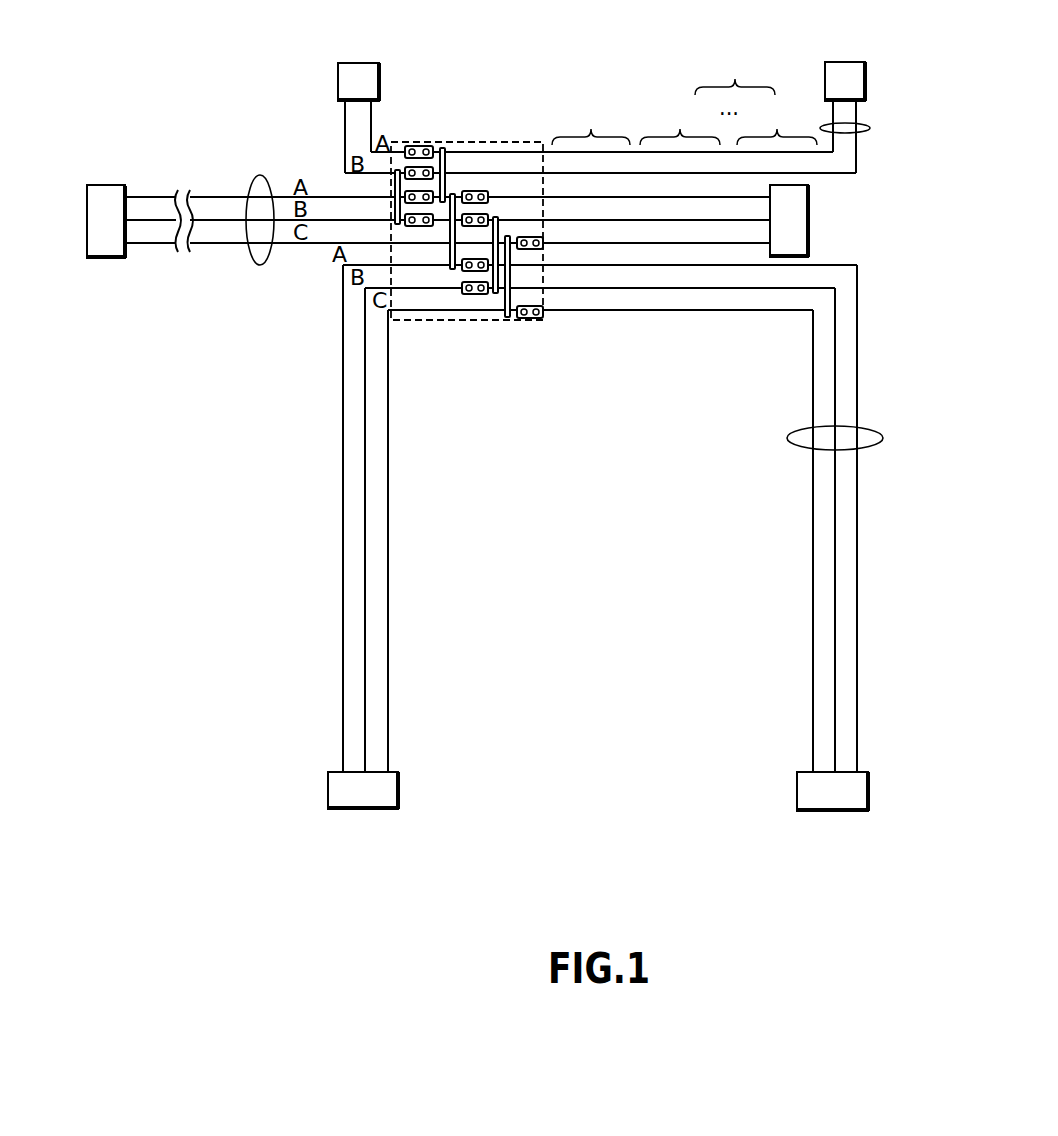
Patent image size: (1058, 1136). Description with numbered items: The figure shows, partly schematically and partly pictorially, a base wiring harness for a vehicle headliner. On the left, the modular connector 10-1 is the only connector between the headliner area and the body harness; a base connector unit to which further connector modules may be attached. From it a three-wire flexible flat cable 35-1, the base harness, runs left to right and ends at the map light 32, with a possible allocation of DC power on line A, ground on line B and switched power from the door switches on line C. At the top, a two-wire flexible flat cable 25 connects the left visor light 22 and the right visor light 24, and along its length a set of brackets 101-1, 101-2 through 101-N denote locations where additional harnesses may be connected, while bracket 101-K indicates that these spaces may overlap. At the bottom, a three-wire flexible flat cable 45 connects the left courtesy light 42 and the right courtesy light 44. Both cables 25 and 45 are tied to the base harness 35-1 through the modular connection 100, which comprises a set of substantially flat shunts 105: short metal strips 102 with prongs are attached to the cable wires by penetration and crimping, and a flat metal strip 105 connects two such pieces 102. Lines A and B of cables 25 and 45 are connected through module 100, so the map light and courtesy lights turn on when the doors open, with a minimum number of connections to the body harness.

The connector 10-1 is at (118, 185).
The three-wire flexible flat cable 35-1 is at (262, 264).
The left visor light 22 is at (380, 80).
The right visor light 24 is at (866, 63).
The two-wire flexible flat cable 25 is at (866, 130).
The map light 32 is at (808, 208).
The modular connection 100 is at (518, 142).
The bracket 101-1 is at (591, 124).
The bracket 101-2 is at (680, 124).
The bracket 101-N is at (777, 124).
The bracket 101-K is at (735, 74).
The flat shunt 105 is at (503, 300).
The metal strip 102 is at (527, 318).
The three-wire flexible flat cable 45 is at (870, 432).
The left courtesy light 42 is at (398, 772).
The right courtesy light 44 is at (797, 772).